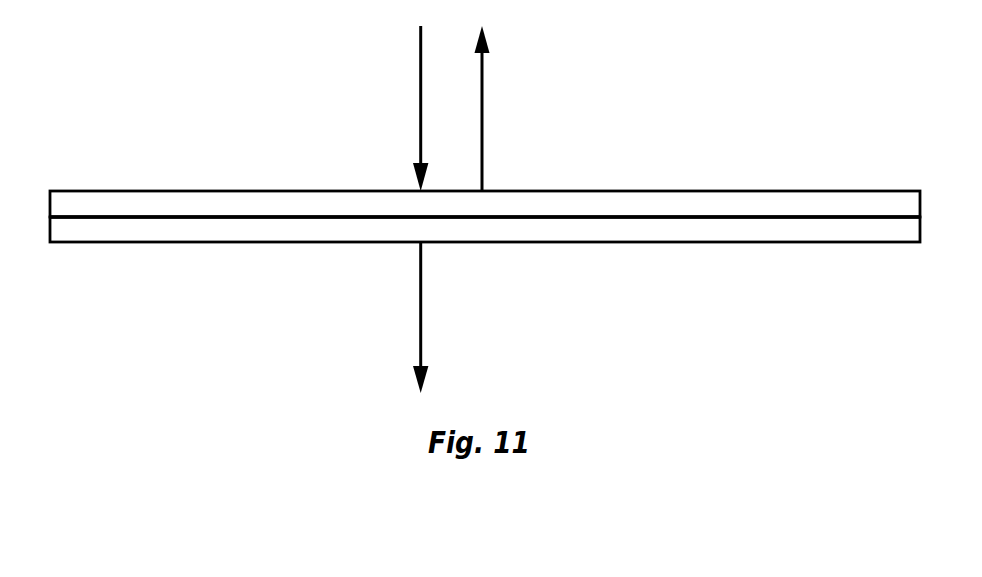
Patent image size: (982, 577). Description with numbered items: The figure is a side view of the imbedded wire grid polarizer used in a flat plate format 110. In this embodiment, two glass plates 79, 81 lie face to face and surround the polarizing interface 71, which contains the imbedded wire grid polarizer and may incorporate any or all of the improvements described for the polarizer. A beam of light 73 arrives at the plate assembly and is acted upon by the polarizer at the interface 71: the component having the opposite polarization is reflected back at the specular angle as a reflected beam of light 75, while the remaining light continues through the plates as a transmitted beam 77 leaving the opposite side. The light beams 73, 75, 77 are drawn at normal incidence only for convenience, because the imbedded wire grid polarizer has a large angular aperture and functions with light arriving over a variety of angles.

The flat plate format 110 is at (102, 144).
The polarizing interface 71 is at (578, 216).
The incident light beam 73 is at (418, 107).
The reflected light beam 75 is at (485, 122).
The transmitted light beam 77 is at (422, 347).
The first glass plate 79 is at (783, 233).
The glass plate 81 is at (735, 202).